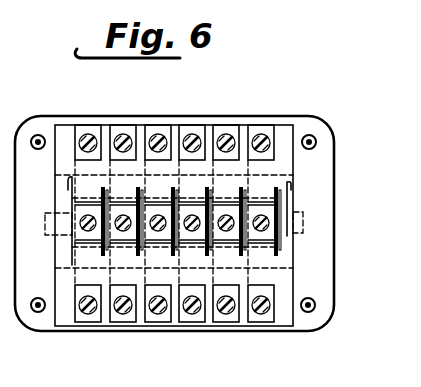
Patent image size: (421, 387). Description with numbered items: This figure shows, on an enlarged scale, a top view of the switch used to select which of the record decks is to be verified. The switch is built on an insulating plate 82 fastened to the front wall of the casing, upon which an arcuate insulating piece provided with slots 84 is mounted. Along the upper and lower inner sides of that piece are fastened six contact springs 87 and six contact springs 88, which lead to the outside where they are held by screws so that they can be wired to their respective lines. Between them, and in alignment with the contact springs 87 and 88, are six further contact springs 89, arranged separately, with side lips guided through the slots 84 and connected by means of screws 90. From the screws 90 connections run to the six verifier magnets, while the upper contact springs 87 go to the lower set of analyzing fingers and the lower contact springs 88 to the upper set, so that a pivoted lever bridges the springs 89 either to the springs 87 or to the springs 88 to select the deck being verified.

The insulating plate 82 is at (87, 125).
The contact springs 87 is at (186, 136).
The contact springs 88 is at (224, 309).
The slots 84 is at (170, 196).
The contact springs 89 is at (137, 237).
The screws 90 is at (130, 235).